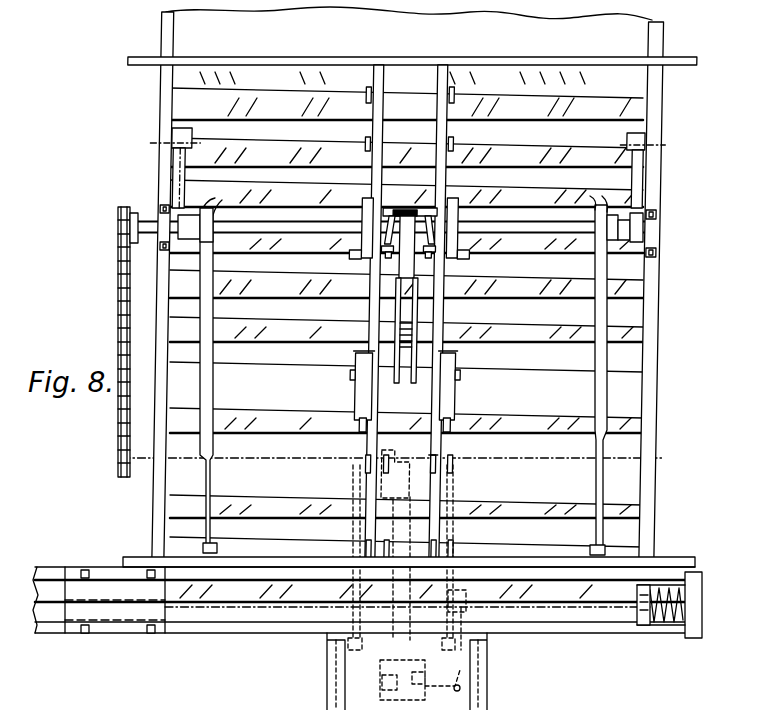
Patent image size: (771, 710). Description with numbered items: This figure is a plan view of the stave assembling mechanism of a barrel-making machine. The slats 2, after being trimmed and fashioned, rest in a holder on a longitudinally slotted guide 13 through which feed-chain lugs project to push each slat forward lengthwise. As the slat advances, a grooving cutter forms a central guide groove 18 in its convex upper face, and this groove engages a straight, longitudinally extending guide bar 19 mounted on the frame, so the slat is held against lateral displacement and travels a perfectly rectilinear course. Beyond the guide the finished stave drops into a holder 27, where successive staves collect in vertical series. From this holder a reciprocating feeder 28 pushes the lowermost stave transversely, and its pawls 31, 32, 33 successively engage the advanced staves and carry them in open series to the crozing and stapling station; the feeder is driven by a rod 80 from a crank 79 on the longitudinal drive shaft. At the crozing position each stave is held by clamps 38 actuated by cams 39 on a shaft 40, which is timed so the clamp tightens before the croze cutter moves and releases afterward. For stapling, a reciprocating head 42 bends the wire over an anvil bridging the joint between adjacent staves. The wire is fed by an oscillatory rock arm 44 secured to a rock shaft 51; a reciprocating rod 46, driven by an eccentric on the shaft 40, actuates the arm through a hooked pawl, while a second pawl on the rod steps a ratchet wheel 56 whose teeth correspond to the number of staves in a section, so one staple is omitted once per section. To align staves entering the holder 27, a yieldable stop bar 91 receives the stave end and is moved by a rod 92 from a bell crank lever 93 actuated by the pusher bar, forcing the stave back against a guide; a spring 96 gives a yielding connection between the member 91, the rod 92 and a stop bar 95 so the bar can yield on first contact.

The slats 2 is at (635, 354).
The longitudinally slotted guide 13 is at (53, 628).
The guide groove 18 is at (292, 602).
The guide bar 19 is at (48, 600).
The holder 27 is at (622, 625).
The reciprocating feeder 28 is at (456, 489).
The pawl 31 is at (455, 548).
The pawl 32 is at (460, 460).
The pawl 33 is at (460, 378).
The clamps 38 is at (172, 169).
The cams 39 is at (160, 214).
The shaft 40 is at (595, 265).
The reciprocating head 42 is at (455, 215).
The oscillatory rock arm 44 is at (355, 390).
The reciprocating rod 46 is at (405, 346).
The rock shaft 51 is at (437, 355).
The ratchet wheel 56 is at (420, 333).
The crank 79 is at (396, 472).
The rod 80 is at (345, 550).
The yieldable stop bar 91 is at (655, 588).
The rod 92 is at (538, 610).
The bell crank lever 93 is at (462, 665).
The stop bar 95 is at (697, 612).
The spring 96 is at (680, 592).